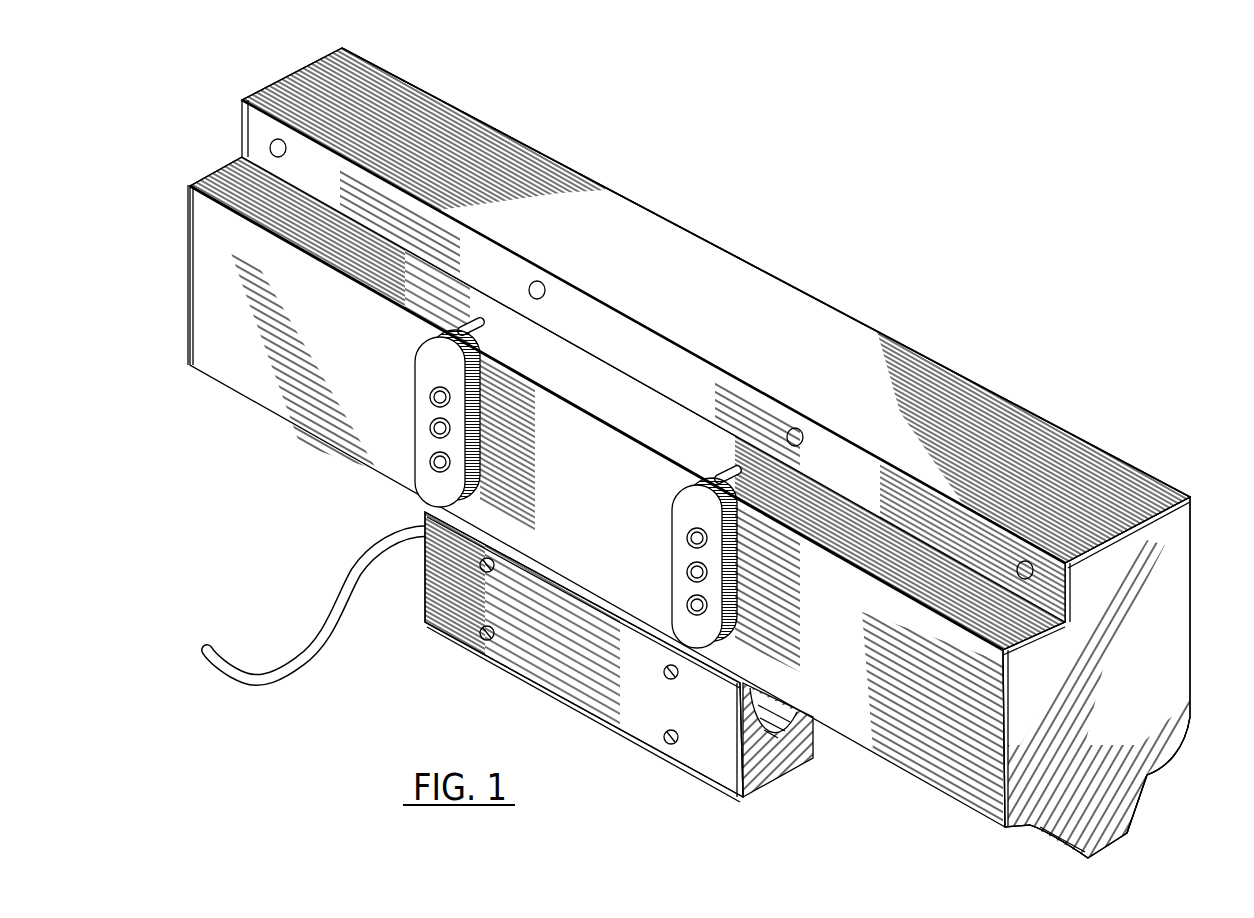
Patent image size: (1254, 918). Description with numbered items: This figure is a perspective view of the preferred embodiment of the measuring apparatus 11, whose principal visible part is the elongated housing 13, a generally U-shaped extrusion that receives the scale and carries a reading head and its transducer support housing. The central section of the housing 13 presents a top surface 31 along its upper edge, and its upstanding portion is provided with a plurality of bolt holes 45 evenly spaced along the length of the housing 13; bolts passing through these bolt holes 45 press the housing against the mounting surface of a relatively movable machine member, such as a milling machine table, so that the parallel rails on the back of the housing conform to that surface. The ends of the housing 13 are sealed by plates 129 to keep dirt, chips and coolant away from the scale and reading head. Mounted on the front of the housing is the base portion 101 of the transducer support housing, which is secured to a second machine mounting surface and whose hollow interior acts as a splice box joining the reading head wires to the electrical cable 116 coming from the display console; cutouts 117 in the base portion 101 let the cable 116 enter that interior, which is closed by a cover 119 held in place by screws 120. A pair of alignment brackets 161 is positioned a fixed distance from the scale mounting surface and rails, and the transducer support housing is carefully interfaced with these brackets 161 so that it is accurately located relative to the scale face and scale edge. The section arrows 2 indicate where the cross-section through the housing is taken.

The cable support assembly 11 is at (970, 306).
The support beam 13 is at (950, 767).
The upper wall of beam 31 is at (797, 300).
The mounting holes 45 is at (268, 147).
The end block of bracket 101 is at (765, 772).
The cable 116 is at (327, 628).
The cable channel 117 is at (773, 737).
The bracket plate 119 is at (641, 665).
The screws 120 is at (487, 572).
The curved surface of beam 129 is at (188, 350).
The cable clips 161 is at (433, 365).
The section line 2- 2 is at (711, 577).